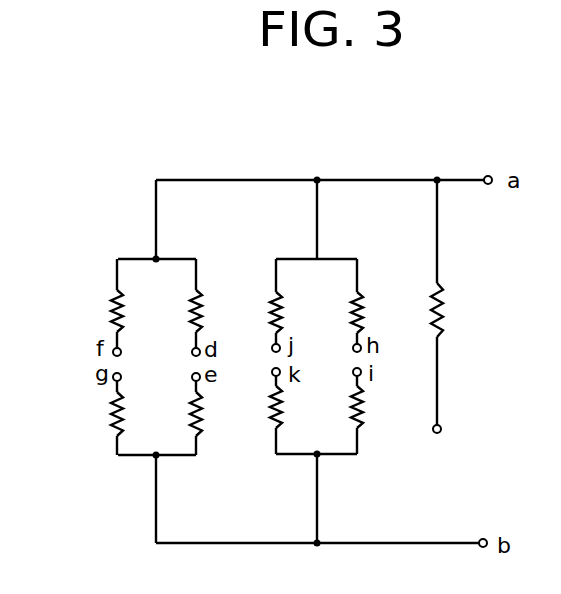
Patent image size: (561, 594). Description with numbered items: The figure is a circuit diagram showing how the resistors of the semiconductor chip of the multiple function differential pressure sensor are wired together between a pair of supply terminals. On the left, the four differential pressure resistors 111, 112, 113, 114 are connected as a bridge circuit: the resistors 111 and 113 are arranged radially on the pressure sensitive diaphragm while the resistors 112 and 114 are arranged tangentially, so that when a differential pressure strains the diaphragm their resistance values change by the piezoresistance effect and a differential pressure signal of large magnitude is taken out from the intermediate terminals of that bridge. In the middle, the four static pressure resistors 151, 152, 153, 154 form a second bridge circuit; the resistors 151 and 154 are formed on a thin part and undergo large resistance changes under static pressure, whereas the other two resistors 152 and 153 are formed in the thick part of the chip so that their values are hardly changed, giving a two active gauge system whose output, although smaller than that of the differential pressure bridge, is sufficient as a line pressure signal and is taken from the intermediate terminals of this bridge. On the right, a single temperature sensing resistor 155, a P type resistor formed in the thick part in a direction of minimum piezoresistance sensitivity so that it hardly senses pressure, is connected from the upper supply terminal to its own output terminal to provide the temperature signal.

The differential pressure resistor 111 is at (183, 316).
The differential pressure resistor 112 is at (191, 403).
The differential pressure resistor 113 is at (111, 410).
The differential pressure resistor 114 is at (108, 318).
The static pressure resistor 151 is at (366, 310).
The static pressure resistor 152 is at (366, 412).
The static pressure resistor 153 is at (269, 410).
The static pressure resistor 154 is at (271, 316).
The temperature sensing resistor 155 is at (445, 305).